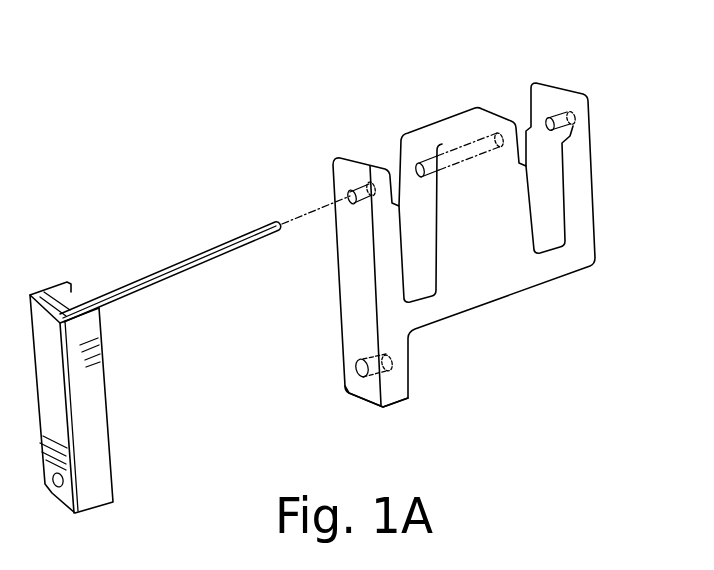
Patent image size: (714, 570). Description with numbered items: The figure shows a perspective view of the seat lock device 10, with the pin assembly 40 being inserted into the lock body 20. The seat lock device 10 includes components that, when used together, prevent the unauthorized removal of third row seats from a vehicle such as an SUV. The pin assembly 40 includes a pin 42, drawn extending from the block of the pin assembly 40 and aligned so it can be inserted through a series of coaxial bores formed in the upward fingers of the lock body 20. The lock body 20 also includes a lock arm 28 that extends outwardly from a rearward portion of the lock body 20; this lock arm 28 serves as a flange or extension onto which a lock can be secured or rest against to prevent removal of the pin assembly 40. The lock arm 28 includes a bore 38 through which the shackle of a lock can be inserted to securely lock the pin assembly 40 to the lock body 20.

The seat lock device 10 is at (120, 105).
The lock body 20 is at (495, 290).
The lock arm 28 is at (408, 380).
The bore 38 is at (358, 362).
The pin assembly 40 is at (120, 390).
The pin 42 is at (155, 262).